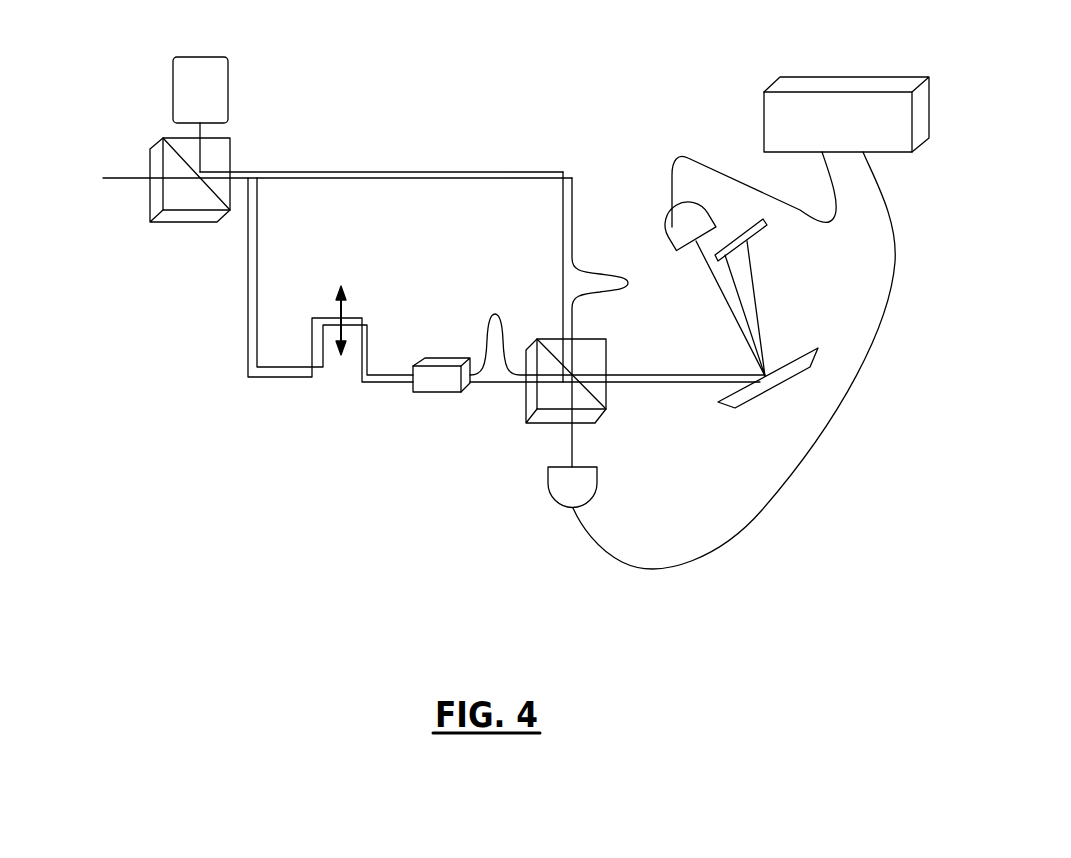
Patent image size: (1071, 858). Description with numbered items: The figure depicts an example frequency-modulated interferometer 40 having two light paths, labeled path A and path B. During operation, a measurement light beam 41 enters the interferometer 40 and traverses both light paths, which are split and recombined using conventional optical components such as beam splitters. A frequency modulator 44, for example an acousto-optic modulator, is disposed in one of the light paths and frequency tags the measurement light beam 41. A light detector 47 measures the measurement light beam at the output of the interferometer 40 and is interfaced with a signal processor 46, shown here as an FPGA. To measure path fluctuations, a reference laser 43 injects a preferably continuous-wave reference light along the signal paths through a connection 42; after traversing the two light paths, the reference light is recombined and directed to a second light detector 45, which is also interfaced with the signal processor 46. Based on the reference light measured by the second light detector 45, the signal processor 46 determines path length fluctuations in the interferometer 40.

The frequency-modulated interferometer 40 is at (138, 421).
The measurement light beam 41 is at (112, 178).
The optical fiber connection 42 is at (200, 158).
The reference laser 43 is at (216, 57).
The frequency modulator 44 is at (425, 392).
The second light detector 45 is at (665, 222).
The signal processor 46 is at (829, 77).
The light detector 47 is at (547, 479).